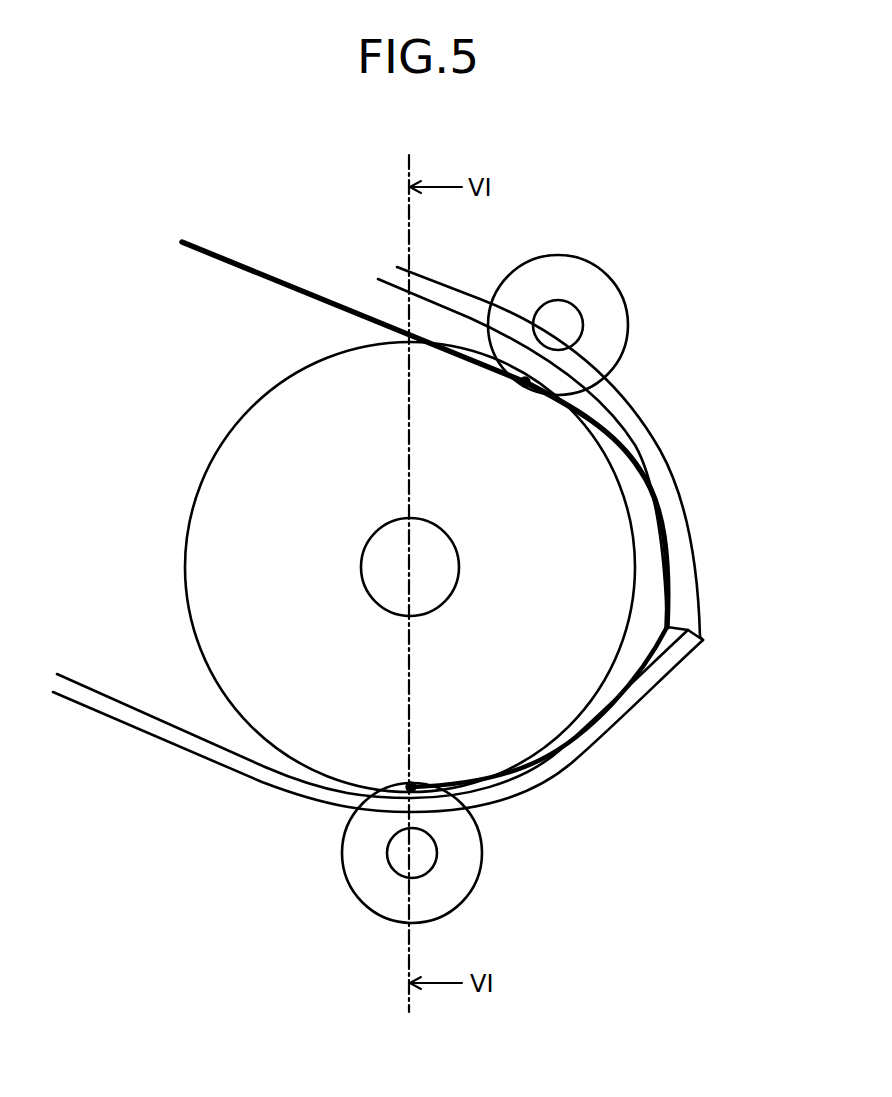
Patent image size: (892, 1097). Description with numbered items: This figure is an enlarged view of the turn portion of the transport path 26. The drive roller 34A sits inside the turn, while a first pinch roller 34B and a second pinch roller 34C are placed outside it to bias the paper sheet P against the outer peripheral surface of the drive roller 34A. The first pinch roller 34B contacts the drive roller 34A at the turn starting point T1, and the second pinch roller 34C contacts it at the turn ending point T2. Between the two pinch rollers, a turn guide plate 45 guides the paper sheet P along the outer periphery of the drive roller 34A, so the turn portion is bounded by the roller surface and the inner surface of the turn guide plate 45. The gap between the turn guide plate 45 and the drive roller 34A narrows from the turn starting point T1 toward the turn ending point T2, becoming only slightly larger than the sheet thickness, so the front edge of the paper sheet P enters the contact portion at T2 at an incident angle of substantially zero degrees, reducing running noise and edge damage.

The drive roller 34A is at (185, 542).
The first pinch roller 34B is at (613, 328).
The second pinch roller 34C is at (357, 857).
The turn guide plate 45 is at (668, 485).
The transport path 26 is at (673, 585).
The paper sheet P is at (212, 248).
The turn starting point T1 is at (524, 385).
The turn ending point T2 is at (411, 787).